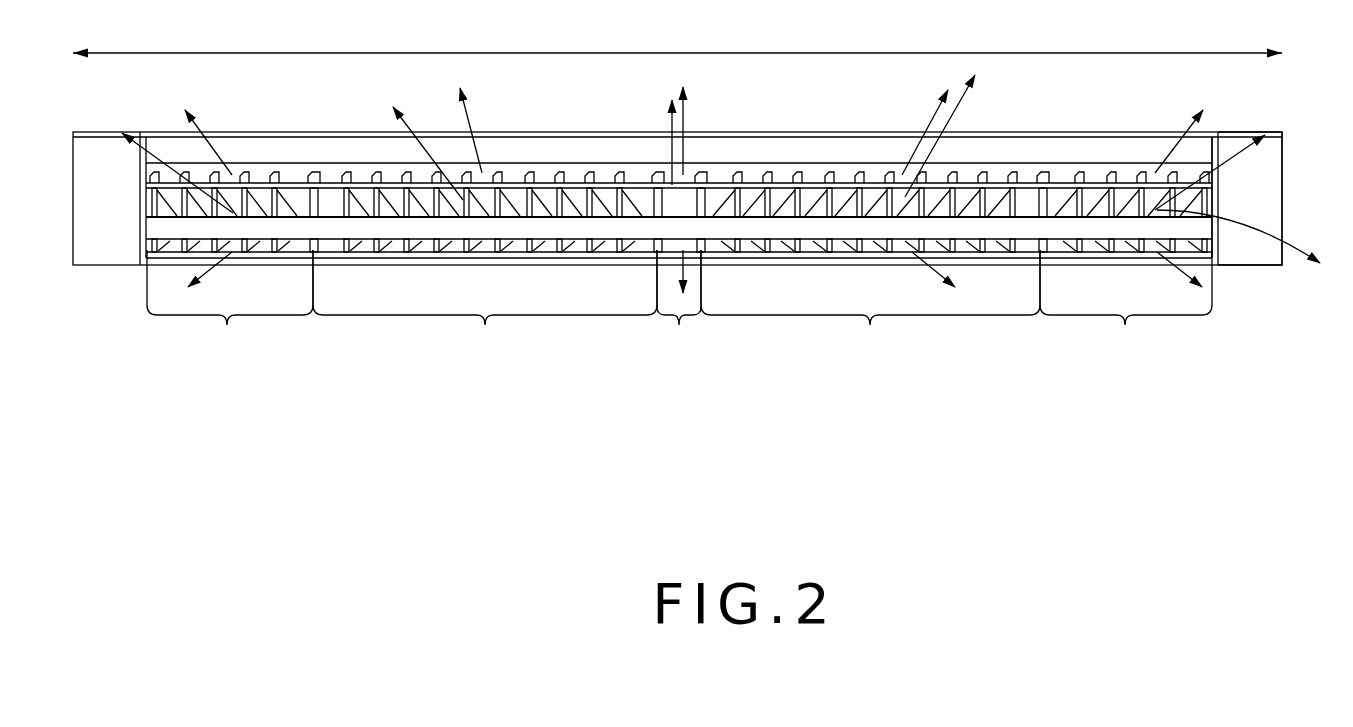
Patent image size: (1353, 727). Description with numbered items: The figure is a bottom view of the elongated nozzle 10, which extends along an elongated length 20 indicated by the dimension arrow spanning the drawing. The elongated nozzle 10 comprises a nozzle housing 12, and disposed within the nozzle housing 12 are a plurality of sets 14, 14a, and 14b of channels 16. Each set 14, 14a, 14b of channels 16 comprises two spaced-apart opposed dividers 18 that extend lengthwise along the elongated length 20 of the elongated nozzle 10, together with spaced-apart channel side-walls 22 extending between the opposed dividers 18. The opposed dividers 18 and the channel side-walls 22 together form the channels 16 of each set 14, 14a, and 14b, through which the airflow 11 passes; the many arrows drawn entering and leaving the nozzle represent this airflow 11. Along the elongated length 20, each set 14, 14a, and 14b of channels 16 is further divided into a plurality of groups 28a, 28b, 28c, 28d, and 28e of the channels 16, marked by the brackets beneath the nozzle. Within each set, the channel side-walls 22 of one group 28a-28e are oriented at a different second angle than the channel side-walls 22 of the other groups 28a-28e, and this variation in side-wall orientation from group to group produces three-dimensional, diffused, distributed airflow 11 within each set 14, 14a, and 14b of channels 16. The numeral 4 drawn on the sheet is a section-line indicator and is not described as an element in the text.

The elongated nozzle 10 is at (1228, 313).
The elongated length 20 is at (538, 52).
The top plate 4 is at (1140, 158).
The airflow 11 is at (205, 137).
The nozzle housing 12 is at (1262, 190).
The set of channels 14 is at (1127, 247).
The set of channels 14a is at (1197, 207).
The set of channels 14b is at (1092, 182).
The channels 16 is at (903, 250).
The opposed dividers 18 is at (1067, 183).
The channel side-walls 22 is at (580, 200).
The group of channels 28a is at (230, 307).
The group of channels 28b is at (485, 308).
The group of channels 28c is at (675, 308).
The group of channels 28d is at (870, 308).
The group of channels 28e is at (1126, 308).